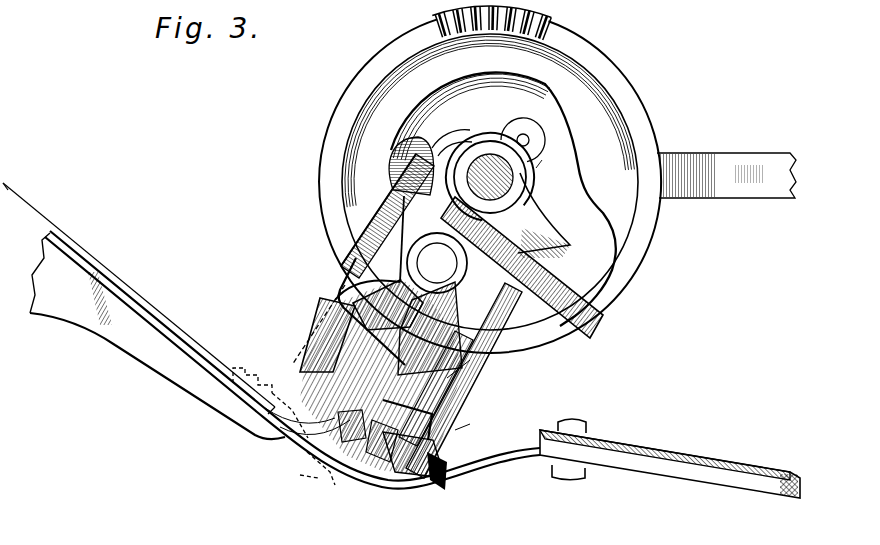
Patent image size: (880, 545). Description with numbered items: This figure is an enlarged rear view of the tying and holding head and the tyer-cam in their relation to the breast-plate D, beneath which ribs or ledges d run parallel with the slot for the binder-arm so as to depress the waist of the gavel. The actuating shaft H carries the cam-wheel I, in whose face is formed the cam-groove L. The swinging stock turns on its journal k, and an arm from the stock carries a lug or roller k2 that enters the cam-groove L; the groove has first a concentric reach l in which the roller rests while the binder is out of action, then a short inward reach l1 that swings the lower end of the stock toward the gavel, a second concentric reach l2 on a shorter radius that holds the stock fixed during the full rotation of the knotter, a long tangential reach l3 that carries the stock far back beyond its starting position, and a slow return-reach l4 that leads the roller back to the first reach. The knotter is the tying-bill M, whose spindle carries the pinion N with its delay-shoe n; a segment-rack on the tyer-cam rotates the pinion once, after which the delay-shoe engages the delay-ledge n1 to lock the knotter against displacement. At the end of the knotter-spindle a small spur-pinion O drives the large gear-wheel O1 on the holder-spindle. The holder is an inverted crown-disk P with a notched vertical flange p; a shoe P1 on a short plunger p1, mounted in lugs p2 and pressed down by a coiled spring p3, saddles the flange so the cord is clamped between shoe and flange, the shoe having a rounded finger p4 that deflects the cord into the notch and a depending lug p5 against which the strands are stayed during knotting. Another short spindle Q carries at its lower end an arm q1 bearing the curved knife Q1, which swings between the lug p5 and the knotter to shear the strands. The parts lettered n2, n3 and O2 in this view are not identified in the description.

The cam-wheel I is at (490, 179).
The arm of casing n2 is at (714, 164).
The cam-groove L is at (503, 199).
The concentric reach l is at (471, 117).
The short inward reach l1 is at (523, 130).
The second concentric reach l2 is at (547, 167).
The long tangential reach l3 is at (555, 215).
The slow return-reach l4 is at (566, 294).
The shaft H is at (490, 176).
The lug or roller k2 is at (390, 152).
The spur-pinion O is at (387, 216).
The journal k is at (437, 263).
The slide bar O2 is at (600, 336).
The large gear-wheel O1 is at (458, 370).
The pinion N is at (350, 272).
The delay-shoe n is at (327, 335).
The delay-ledge n1 is at (393, 239).
The cylinder head n3 is at (388, 324).
The vertical flange p is at (385, 421).
The shank or plunger p1 is at (464, 380).
The lugs p2 is at (432, 384).
The coiled spring p3 is at (430, 328).
The rounded finger p4 is at (463, 431).
The depending lug p5 is at (307, 433).
The inverted crown-disk P is at (591, 458).
The shoe P1 is at (292, 364).
The short spindle Q is at (314, 325).
The curved knife Q1 is at (378, 446).
The arm q1 is at (270, 403).
The tying-bill M is at (306, 467).
The breast-plate D is at (139, 298).
The ribs or ledges d is at (157, 336).